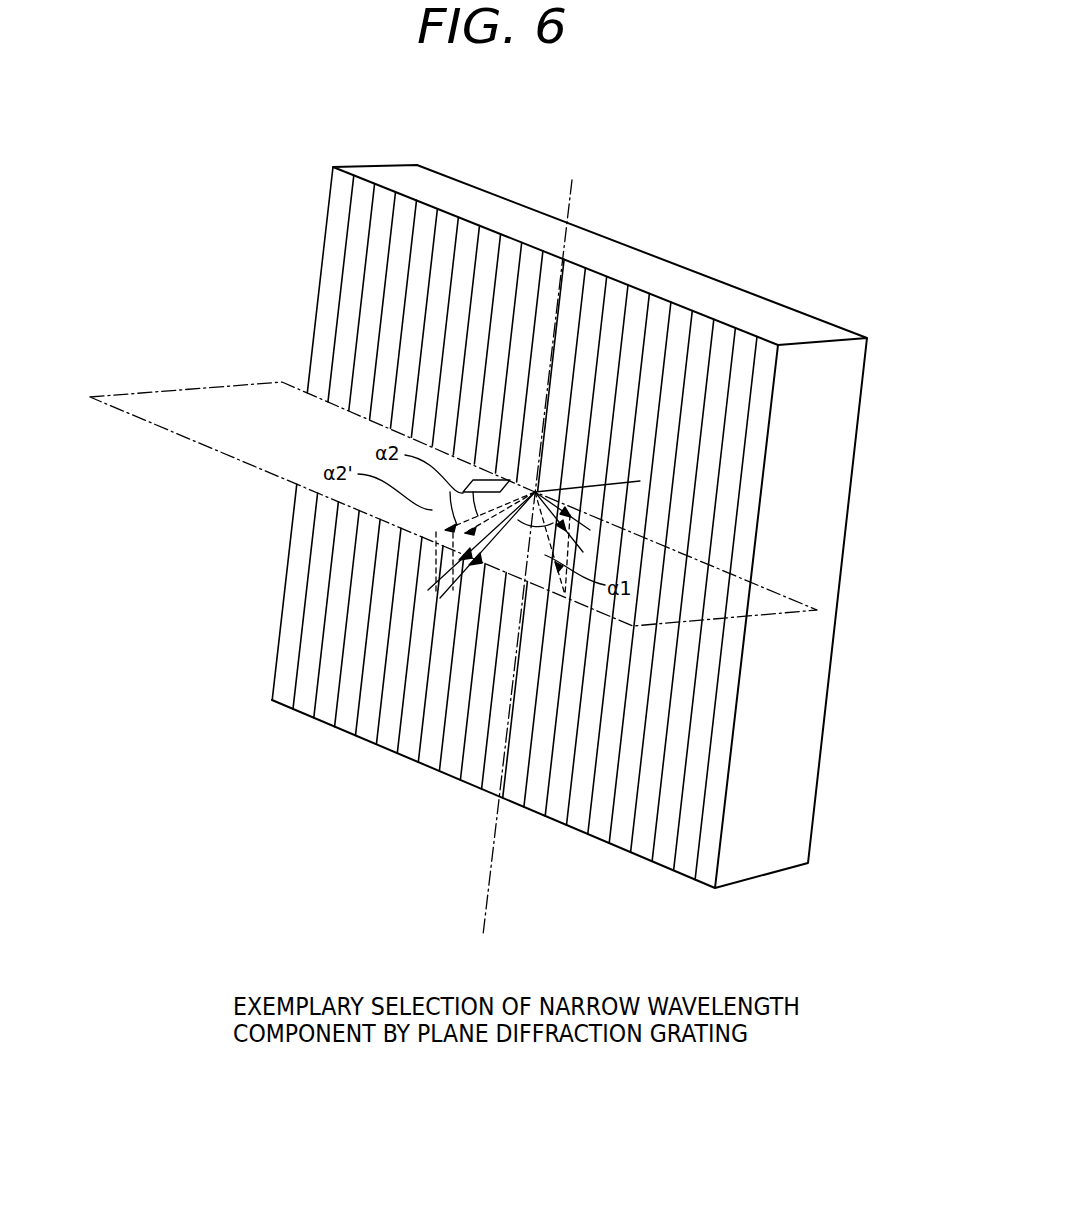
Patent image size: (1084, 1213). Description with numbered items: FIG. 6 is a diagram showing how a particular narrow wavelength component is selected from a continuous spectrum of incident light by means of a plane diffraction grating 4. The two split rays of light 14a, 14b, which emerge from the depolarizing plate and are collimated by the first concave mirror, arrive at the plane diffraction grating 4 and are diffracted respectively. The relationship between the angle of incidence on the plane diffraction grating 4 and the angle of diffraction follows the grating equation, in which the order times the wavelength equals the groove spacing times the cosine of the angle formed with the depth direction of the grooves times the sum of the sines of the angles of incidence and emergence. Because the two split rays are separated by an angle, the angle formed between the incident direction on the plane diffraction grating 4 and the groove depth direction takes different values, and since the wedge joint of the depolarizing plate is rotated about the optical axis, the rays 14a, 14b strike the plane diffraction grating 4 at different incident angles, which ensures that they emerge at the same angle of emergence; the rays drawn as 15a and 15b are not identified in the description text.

The plane diffraction grating 4 is at (772, 312).
The split ray of light 14a is at (583, 550).
The split ray of light 14b is at (590, 530).
The incident light beam 15a is at (470, 565).
The incident light beam 15b is at (430, 587).